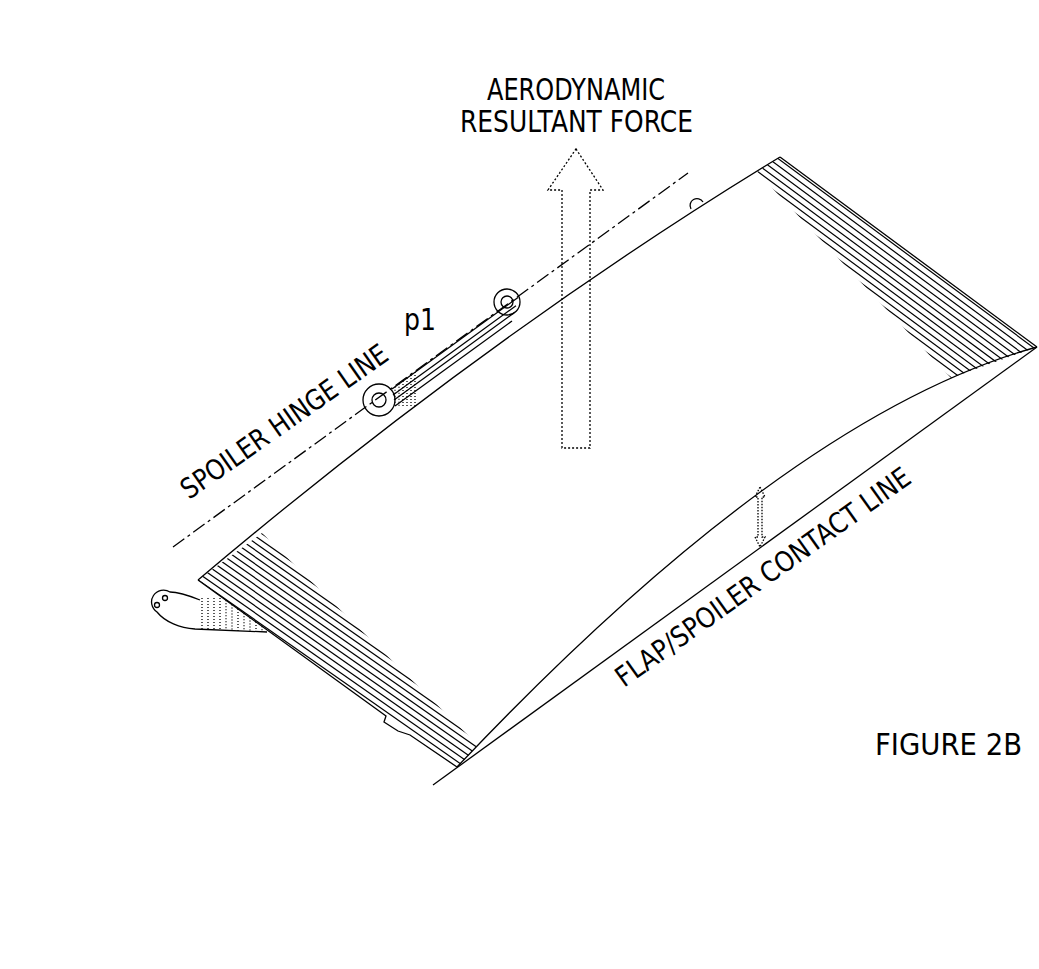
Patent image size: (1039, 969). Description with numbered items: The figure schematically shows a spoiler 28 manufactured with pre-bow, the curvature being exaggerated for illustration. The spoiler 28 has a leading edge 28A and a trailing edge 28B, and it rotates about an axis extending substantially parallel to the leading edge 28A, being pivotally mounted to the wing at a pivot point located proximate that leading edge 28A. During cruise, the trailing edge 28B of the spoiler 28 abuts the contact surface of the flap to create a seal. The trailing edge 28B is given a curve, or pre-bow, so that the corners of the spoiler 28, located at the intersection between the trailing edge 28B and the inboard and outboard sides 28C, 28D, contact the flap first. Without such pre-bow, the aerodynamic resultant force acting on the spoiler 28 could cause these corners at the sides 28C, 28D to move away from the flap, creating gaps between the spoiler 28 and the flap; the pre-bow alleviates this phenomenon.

The spoiler 28 is at (893, 130).
The leading edge of the spoiler 28A is at (332, 470).
The trailing edge of the spoiler 28B is at (872, 403).
The inboard side of the spoiler 28C is at (900, 243).
The outboard side of the spoiler 28D is at (333, 676).